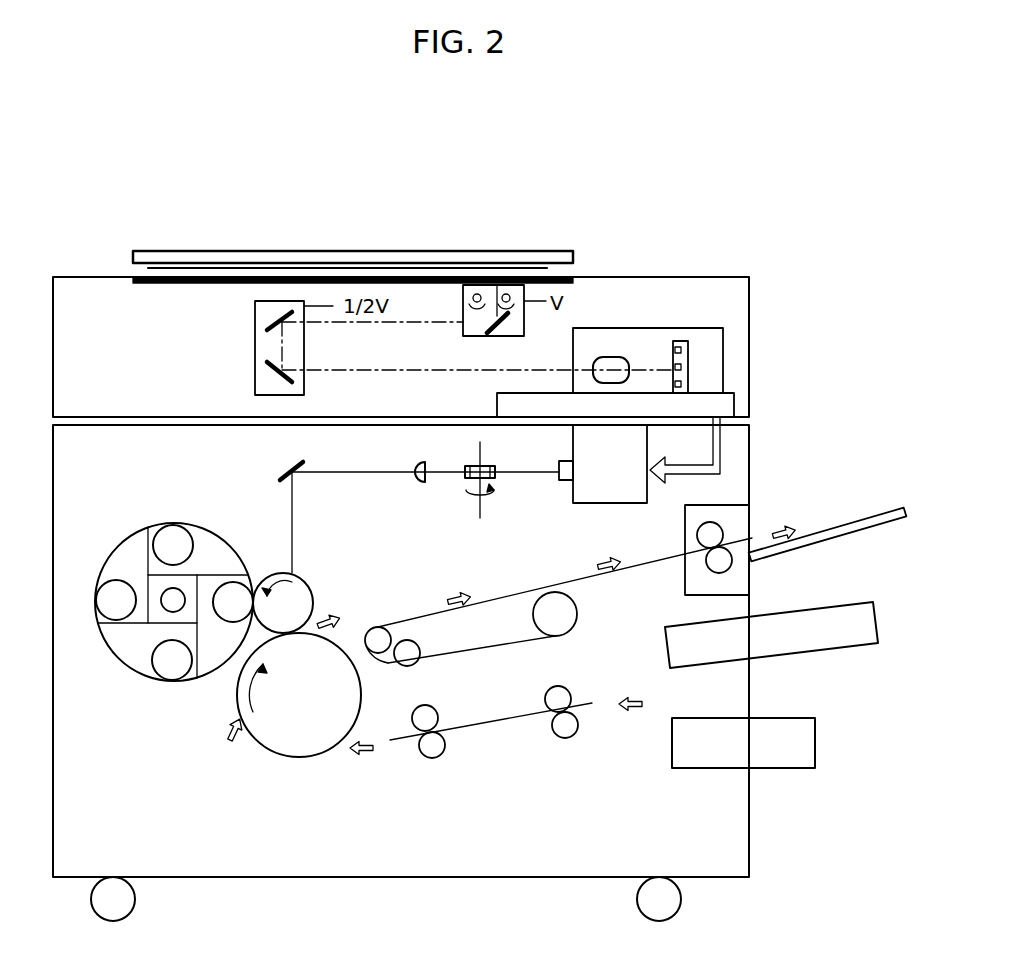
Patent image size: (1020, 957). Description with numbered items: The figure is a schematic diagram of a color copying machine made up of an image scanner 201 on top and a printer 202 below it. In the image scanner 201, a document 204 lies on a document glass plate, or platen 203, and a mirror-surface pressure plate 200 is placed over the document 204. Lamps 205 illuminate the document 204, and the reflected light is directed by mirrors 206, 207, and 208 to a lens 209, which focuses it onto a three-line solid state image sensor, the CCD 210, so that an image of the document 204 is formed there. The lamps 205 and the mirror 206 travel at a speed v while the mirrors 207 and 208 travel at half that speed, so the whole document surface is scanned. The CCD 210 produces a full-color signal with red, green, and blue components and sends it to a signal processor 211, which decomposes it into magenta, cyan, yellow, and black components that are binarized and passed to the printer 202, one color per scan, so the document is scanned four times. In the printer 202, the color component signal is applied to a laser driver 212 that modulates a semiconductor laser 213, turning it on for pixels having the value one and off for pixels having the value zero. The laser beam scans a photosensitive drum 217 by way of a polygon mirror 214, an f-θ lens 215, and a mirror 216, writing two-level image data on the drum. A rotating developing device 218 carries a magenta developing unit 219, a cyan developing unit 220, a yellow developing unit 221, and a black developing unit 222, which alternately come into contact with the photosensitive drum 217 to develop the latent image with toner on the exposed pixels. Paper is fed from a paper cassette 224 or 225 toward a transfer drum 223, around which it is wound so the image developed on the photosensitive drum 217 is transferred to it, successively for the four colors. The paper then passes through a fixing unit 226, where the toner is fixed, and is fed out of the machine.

The mirror-surface pressure plate 200 is at (263, 250).
The image scanner 201 is at (750, 293).
The printer 202 is at (750, 470).
The document glass plate (platen) 203 is at (571, 279).
The document 204 is at (538, 266).
The lamps 205 is at (506, 294).
The mirror 206 is at (502, 337).
The mirror 207 is at (268, 322).
The mirror 208 is at (268, 376).
The lens 209 is at (613, 355).
The three-line solid state image sensor (CCD) 210 is at (688, 360).
The signal processor 211 is at (734, 403).
The laser driver 212 is at (647, 487).
The semiconductor laser 213 is at (556, 478).
The polygon mirror 214 is at (490, 462).
The f-θ lens 215 is at (418, 483).
The mirror 216 is at (305, 462).
The photosensitive drum 217 is at (313, 590).
The rotating developing device 218 is at (226, 536).
The magenta developing unit 219 is at (250, 583).
The cyan developing unit 220 is at (157, 680).
The yellow developing unit 221 is at (99, 620).
The black developing unit 222 is at (182, 525).
The transfer drum 223 is at (300, 757).
The paper cassette 224 is at (800, 770).
The paper cassette 225 is at (855, 650).
The fixing unit 226 is at (730, 581).